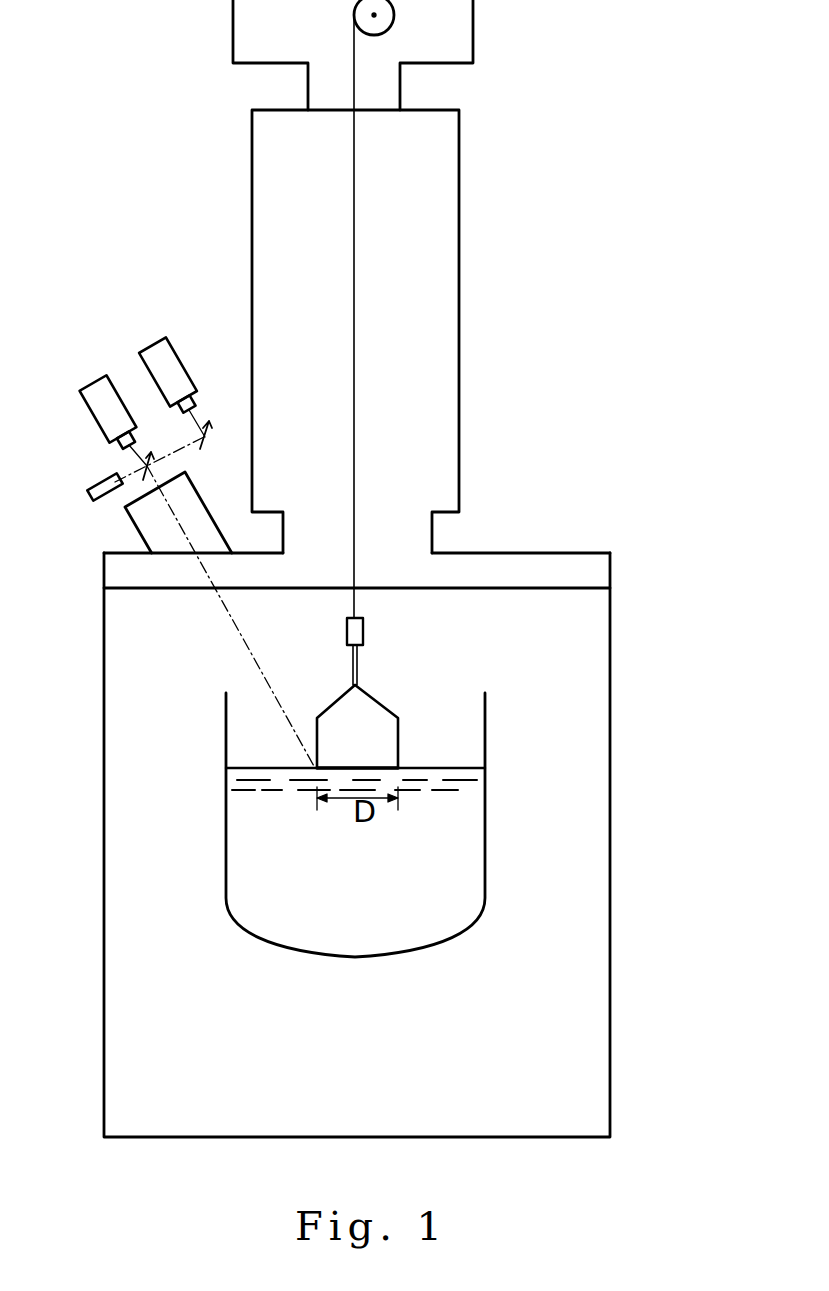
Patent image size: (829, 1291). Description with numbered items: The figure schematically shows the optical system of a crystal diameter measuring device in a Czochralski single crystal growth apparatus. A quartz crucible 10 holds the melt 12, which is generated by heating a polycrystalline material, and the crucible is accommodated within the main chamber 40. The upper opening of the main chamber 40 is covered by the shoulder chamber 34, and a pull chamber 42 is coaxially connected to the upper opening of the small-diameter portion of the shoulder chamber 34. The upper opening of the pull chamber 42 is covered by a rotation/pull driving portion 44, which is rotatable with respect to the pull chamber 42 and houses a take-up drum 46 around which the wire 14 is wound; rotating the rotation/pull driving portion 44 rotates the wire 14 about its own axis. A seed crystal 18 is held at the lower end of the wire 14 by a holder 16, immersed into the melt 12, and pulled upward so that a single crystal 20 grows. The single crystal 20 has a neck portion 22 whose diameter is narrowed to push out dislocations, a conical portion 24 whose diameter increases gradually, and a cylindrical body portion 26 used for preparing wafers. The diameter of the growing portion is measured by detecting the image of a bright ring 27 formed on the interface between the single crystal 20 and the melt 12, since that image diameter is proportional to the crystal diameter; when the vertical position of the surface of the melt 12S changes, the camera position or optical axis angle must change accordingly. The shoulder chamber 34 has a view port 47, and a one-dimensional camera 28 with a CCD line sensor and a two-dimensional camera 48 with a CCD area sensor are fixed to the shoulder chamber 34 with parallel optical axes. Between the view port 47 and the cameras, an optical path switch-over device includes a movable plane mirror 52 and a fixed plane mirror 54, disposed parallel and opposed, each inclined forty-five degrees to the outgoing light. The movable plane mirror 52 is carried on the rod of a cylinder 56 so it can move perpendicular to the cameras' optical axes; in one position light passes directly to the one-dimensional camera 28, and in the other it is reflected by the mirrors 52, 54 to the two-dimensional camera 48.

The quartz crucible 10 is at (488, 845).
The melt 12 is at (462, 827).
The surface of the melt 12S is at (262, 768).
The wire 14 is at (356, 398).
The holder 16 is at (364, 630).
The seed crystal 18 is at (358, 655).
The single crystal 20 is at (437, 650).
The neck portion 22 is at (346, 657).
The conical portion 24 is at (366, 682).
The cylindrical body portion 26 is at (399, 735).
The bright ring 27 is at (348, 768).
The one-dimensional camera 28 is at (97, 377).
The shoulder chamber 34 is at (557, 553).
The main chamber 40 is at (612, 820).
The pull chamber 42 is at (460, 350).
The rotation/pull driving portion 44 is at (474, 27).
The take-up drum 46 is at (395, 15).
The view port 47 is at (212, 517).
The two-dimensional camera 48 is at (162, 340).
The movable plane mirror 52 is at (143, 470).
The fixed plane mirror 54 is at (200, 449).
The cylinder 56 is at (102, 484).